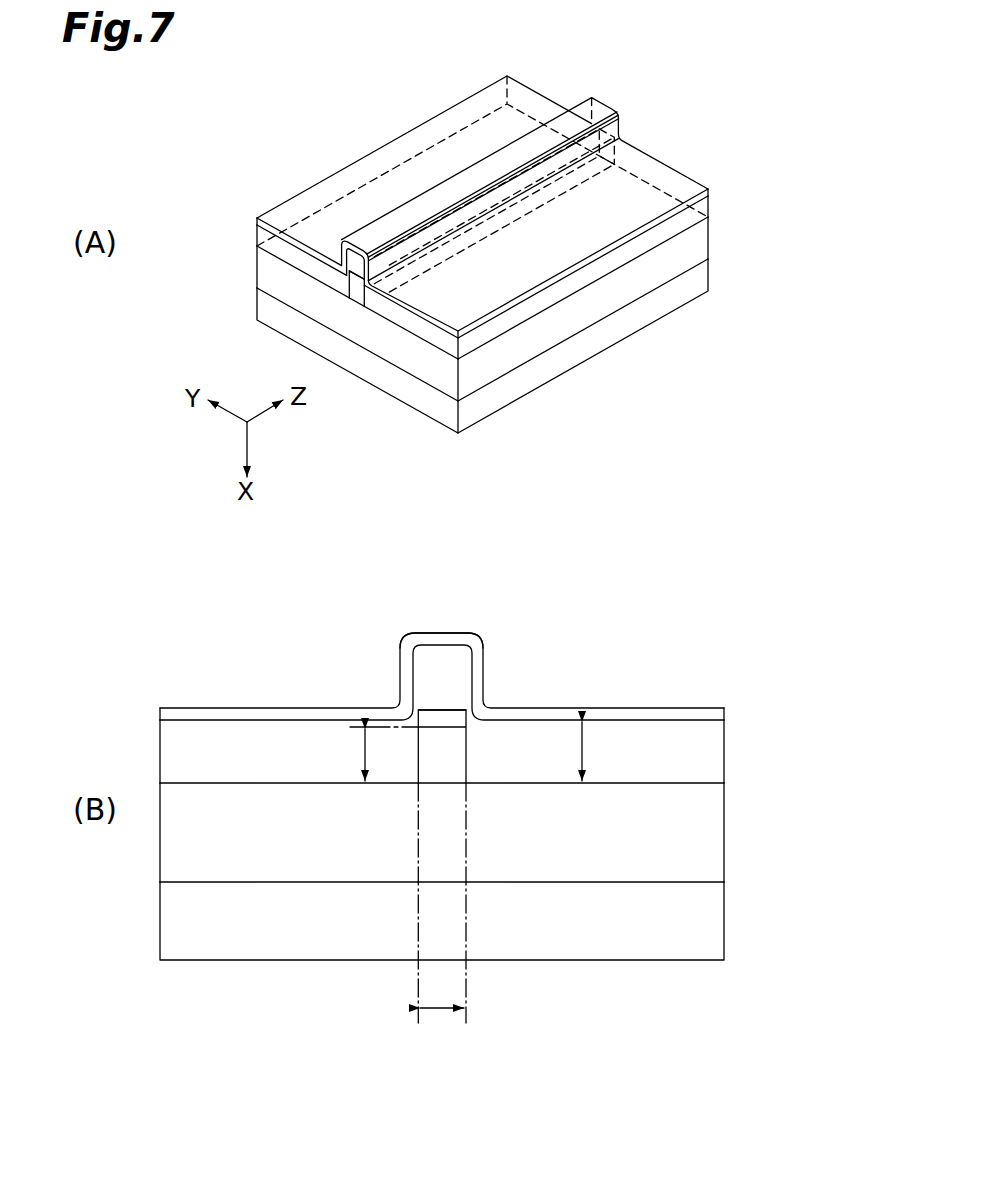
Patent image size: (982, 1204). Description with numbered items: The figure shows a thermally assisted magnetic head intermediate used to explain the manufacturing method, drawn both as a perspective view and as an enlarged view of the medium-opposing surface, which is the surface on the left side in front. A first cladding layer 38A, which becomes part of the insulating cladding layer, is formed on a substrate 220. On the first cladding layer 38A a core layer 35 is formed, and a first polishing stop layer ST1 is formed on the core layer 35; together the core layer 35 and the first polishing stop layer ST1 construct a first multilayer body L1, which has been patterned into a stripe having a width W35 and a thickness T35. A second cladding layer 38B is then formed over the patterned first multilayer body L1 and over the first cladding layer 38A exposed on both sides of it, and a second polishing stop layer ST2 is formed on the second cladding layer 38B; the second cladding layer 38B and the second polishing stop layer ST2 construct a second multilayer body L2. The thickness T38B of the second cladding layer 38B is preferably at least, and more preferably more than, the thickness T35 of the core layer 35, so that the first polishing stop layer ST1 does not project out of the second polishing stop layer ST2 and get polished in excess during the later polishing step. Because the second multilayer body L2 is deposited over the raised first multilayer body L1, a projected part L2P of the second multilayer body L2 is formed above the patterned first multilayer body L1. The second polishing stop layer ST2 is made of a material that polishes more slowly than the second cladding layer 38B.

The core layer 35 is at (355, 297).
The first cladding layer 38A is at (700, 247).
The second cladding layer 38B is at (700, 207).
The substrate 220 is at (700, 280).
The first polishing stop layer ST1 is at (349, 273).
The second polishing stop layer ST2 is at (675, 182).
The first multilayer body L1 is at (400, 576).
The second multilayer body L2 is at (511, 429).
The projected part of the second multilayer body L2P is at (391, 648).
The thickness of the core layer T35 is at (363, 754).
The thickness of the second cladding layer T38B is at (617, 751).
The width of the core layer W35 is at (441, 1032).